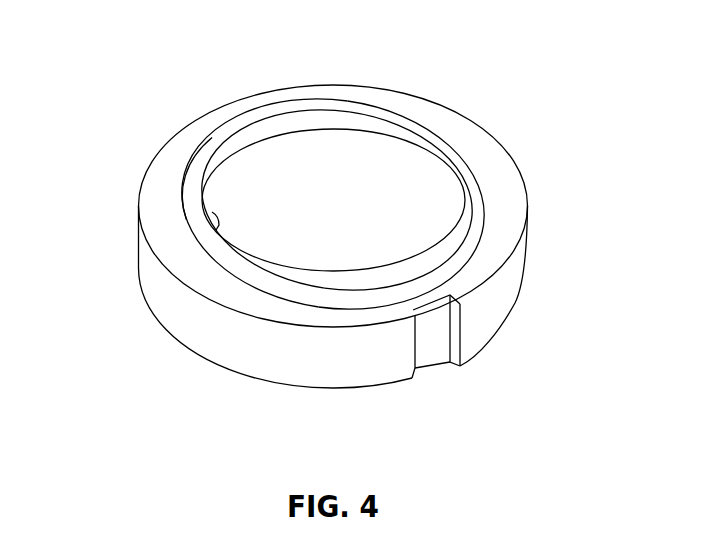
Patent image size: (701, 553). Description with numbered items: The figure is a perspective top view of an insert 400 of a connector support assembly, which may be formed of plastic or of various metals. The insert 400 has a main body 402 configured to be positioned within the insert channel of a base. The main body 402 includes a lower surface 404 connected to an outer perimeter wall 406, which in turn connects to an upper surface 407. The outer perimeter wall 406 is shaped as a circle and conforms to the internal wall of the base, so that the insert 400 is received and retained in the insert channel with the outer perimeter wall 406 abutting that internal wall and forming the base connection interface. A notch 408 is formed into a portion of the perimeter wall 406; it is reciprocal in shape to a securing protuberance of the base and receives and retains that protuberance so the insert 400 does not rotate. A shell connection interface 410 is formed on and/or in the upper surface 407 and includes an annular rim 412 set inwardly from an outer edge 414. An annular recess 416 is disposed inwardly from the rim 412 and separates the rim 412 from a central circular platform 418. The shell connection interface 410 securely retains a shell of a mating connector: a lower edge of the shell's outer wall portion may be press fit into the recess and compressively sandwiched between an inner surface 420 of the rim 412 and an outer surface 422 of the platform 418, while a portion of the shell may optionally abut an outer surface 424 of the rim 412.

The insert 400 is at (150, 64).
The main body 402 is at (517, 173).
The lower surface 404 is at (392, 390).
The outer perimeter wall 406 is at (280, 352).
The upper surface 407 is at (222, 117).
The notch 408 is at (430, 333).
The shell connection interface 410 is at (400, 105).
The annular rim 412 is at (326, 108).
The outer edge 414 is at (157, 250).
The annular recess 416 is at (233, 147).
The central circular platform 418 is at (325, 199).
The inner surface 420 is at (208, 162).
The outer surface 422 is at (219, 228).
The outer surface 424 is at (478, 244).